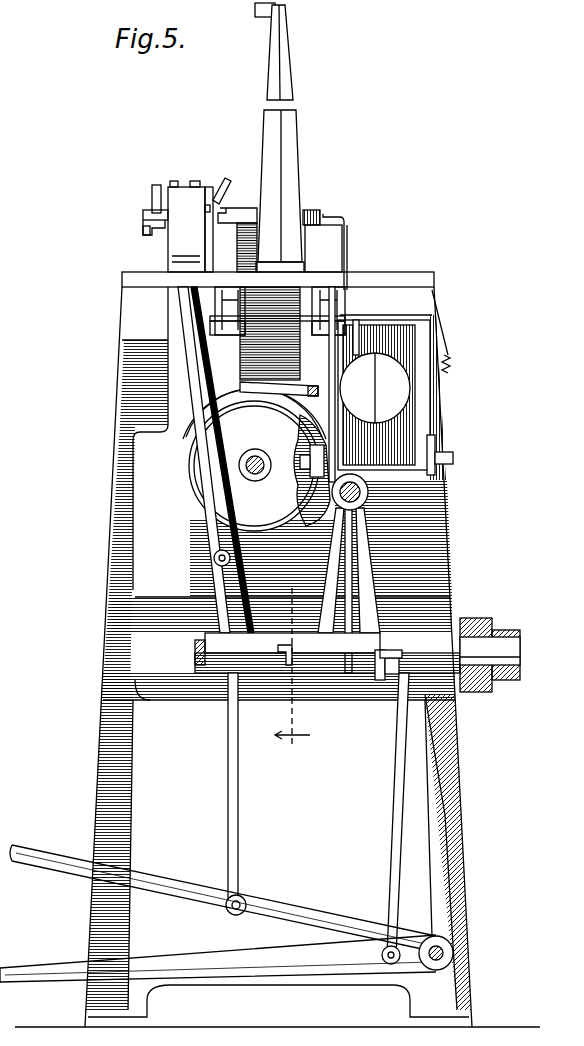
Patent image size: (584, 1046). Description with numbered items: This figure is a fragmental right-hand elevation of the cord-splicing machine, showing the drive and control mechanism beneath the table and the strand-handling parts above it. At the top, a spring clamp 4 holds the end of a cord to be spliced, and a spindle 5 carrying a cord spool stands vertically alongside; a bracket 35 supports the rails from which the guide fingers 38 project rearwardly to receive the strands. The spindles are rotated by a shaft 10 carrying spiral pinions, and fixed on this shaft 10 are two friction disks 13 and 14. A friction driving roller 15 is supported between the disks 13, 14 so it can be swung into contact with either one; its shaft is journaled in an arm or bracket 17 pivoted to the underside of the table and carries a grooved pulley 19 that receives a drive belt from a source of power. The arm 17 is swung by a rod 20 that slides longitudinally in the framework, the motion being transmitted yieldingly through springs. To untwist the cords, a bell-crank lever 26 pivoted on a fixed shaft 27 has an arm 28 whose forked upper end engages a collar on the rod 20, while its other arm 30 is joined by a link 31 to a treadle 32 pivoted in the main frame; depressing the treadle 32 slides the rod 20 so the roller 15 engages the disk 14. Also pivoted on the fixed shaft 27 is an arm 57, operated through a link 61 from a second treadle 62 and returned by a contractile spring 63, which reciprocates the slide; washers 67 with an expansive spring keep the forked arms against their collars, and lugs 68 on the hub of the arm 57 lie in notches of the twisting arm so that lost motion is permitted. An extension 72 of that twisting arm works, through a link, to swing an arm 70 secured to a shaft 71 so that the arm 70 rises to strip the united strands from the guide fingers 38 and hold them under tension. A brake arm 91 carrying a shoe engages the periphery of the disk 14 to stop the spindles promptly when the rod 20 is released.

The spring clamp 4 is at (256, 8).
The spindle 5 is at (313, 212).
The shaft 10 is at (257, 458).
The friction disk 13 is at (302, 522).
The friction disk 14 is at (267, 522).
The friction driving roller 15 is at (322, 450).
The arm or bracket 17 is at (408, 426).
The grooved pulley 19 is at (440, 457).
The rod 20 is at (361, 573).
The bell-crank lever 26 is at (366, 676).
The fixed shaft 27 is at (195, 665).
The arm 28 is at (370, 586).
The arm 30 is at (394, 678).
The link 31 is at (395, 800).
The treadle 32 is at (28, 968).
The bracket 35 is at (185, 233).
The guide finger 38 is at (219, 180).
The arm 57 is at (188, 357).
The link 61 is at (228, 795).
The treadle 62 is at (47, 856).
The contractile spring 63 is at (214, 558).
The washer 67 is at (332, 586).
The lug 68 is at (280, 662).
The arm 70 is at (345, 224).
The shaft 71 is at (240, 345).
The extension 72 is at (331, 366).
The brake arm 91 is at (300, 389).